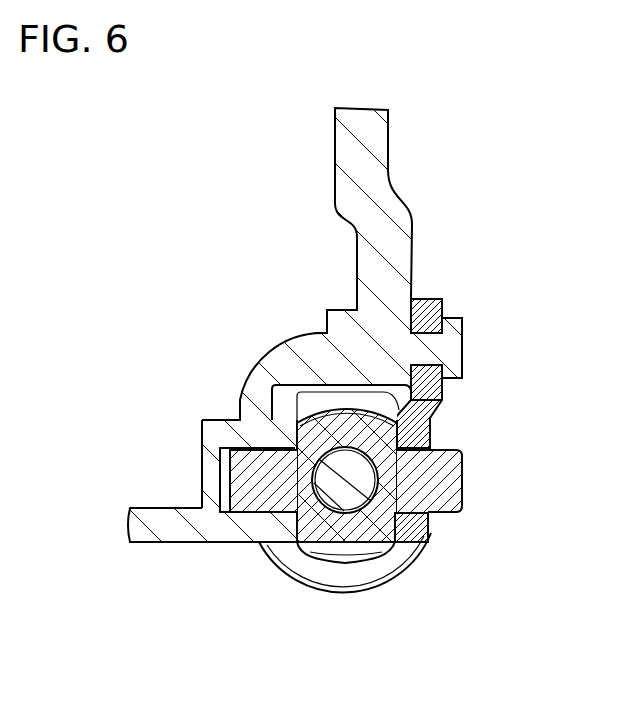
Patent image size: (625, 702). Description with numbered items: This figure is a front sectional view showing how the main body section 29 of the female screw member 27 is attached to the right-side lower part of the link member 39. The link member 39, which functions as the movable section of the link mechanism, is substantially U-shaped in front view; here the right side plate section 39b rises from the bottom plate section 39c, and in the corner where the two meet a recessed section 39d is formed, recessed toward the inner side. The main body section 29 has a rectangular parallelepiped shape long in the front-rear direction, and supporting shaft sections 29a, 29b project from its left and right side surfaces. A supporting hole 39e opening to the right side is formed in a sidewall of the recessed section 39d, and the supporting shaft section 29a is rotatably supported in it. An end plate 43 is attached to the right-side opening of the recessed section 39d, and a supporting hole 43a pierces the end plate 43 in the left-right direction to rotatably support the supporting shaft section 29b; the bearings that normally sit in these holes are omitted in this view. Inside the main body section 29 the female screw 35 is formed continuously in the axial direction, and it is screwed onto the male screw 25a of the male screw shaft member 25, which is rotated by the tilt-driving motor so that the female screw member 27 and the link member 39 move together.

The link member 39 is at (178, 547).
The side plate section 39b is at (397, 197).
The bottom plate section 39c is at (150, 546).
The recessed section 39d is at (442, 400).
The supporting hole 39e is at (202, 463).
The female screw 35 is at (347, 452).
The male screw shaft member 25 is at (338, 500).
The male screw 25a is at (243, 412).
The female screw member 27 is at (346, 552).
The main body section 29 is at (378, 535).
The supporting shaft section 29a is at (240, 467).
The supporting shaft section 29b is at (452, 470).
The end plate 43 is at (430, 522).
The supporting hole 43a is at (437, 502).